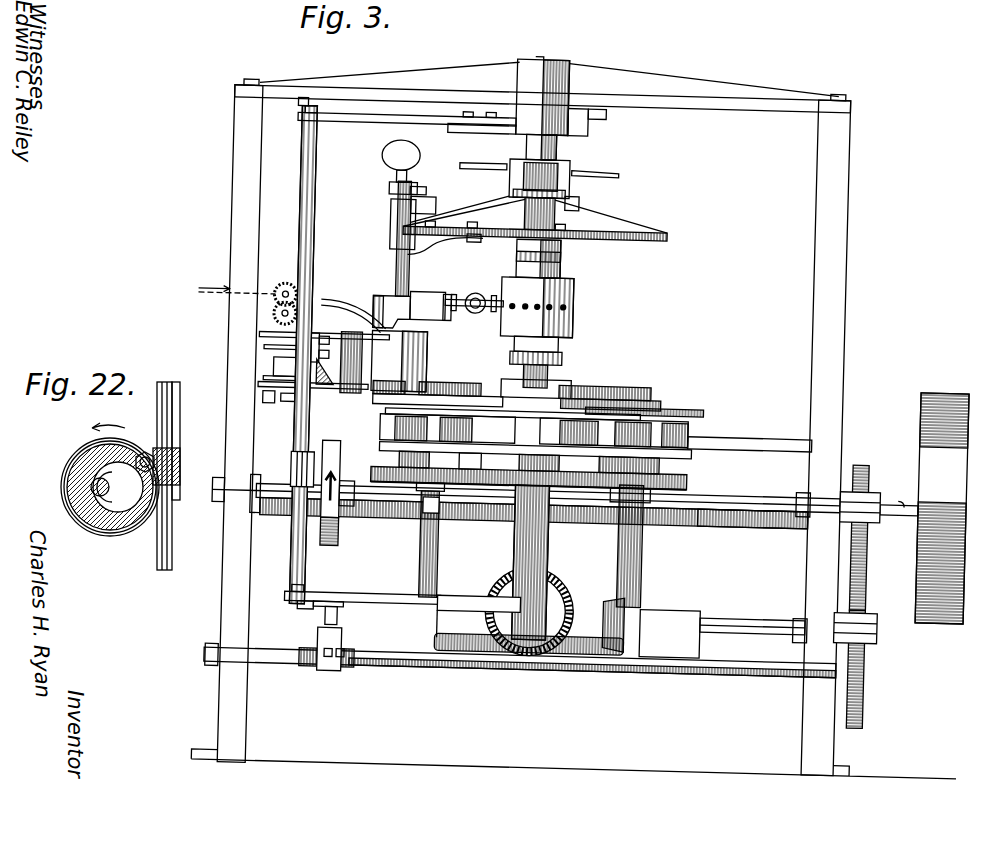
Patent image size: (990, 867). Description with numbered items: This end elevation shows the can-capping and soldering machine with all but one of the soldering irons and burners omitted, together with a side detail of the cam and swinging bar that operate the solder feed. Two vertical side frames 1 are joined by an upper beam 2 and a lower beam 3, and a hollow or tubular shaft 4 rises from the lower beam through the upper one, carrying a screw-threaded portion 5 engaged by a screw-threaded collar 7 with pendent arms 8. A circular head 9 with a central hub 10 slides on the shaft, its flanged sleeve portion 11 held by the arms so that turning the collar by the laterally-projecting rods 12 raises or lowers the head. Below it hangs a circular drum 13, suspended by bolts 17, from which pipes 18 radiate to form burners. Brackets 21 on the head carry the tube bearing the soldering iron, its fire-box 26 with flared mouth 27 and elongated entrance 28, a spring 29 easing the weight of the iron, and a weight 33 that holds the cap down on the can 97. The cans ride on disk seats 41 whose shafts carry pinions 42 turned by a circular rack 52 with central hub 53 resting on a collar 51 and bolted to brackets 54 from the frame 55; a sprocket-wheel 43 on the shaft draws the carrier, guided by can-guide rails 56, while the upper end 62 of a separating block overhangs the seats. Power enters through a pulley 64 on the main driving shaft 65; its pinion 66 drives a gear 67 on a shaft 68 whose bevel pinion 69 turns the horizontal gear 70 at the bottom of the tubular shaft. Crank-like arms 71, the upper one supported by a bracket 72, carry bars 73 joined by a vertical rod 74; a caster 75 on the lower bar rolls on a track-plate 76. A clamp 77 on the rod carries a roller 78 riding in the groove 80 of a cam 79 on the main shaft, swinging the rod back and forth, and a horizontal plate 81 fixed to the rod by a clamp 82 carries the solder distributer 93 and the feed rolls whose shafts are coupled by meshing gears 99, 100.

In FIG. 3, the vertical side frames 1 is at (230, 234).
In FIG. 3, the upper beam 2 is at (666, 92).
In FIG. 3, the lower beam 3 is at (697, 664).
In FIG. 3, the hollow or tubular shaft 4 is at (538, 60).
In FIG. 3, the screw-threaded portion 5 is at (520, 148).
In FIG. 3, the screw-threaded collar 7 is at (593, 171).
In FIG. 3, the pendent arms 8 is at (501, 181).
In FIG. 3, the circular head 9 is at (665, 227).
In FIG. 3, the central hub 10 is at (521, 212).
In FIG. 3, the flanged sleeve portion 11 is at (564, 195).
In FIG. 3, the laterally-projecting rods 12 is at (573, 167).
In FIG. 3, the circular drum 13 is at (567, 322).
In FIG. 3, the bolts 17 is at (564, 261).
In FIG. 3, the pipes 18 is at (494, 302).
In FIG. 3, the brackets 21 is at (382, 234).
In FIG. 3, the fire-box or heat chamber 26 is at (371, 299).
In FIG. 3, the flared mouth 27 is at (421, 299).
In FIG. 3, the elongated entrance 28 is at (442, 325).
In FIG. 3, the spring 29 is at (432, 253).
In FIG. 3, the weight 33 is at (375, 159).
In FIG. 3, the disk 41 is at (657, 395).
In FIG. 3, the pinion 42 is at (689, 474).
In FIG. 3, the sprocket-wheel 43 is at (695, 426).
In FIG. 3, the collar 51 is at (520, 529).
In FIG. 3, the circular rack 52 is at (441, 481).
In FIG. 3, the central hub 53 is at (514, 501).
In FIG. 3, the brackets 54 is at (626, 496).
In FIG. 3, the frame 55 is at (742, 500).
In FIG. 3, the can-guide rails 56 is at (476, 390).
In FIG. 3, the upper end of separating block 62 is at (699, 396).
In FIG. 3, the pulley 64 is at (923, 508).
In FIG. 3, the main driving shaft 65 is at (754, 500).
In FIG. 22, the main driving shaft 65 is at (95, 487).
In FIG. 3, the pinion 66 is at (861, 462).
In FIG. 3, the gear 67 is at (865, 614).
In FIG. 3, the shaft 68 is at (733, 615).
In FIG. 3, the bevel pinion 69 is at (632, 604).
In FIG. 3, the horizontal gear 70 is at (543, 661).
In FIG. 3, the crank-like arms 71 is at (532, 108).
In FIG. 3, the bracket 72 is at (560, 137).
In FIG. 3, the bars 73 is at (412, 125).
In FIG. 3, the vertical rod 74 is at (304, 221).
In FIG. 22, the vertical rod 74 is at (165, 545).
In FIG. 3, the caster or roller 75 is at (355, 637).
In FIG. 3, the horizontal track-plate 76 is at (325, 643).
In FIG. 3, the clamp 77 is at (298, 468).
In FIG. 22, the clamp 77 is at (178, 465).
In FIG. 3, the roller 78 is at (326, 476).
In FIG. 3, the cam 79 is at (340, 533).
In FIG. 22, the cam 79 is at (112, 533).
In FIG. 22, the groove 80 is at (90, 448).
In FIG. 3, the horizontal plate 81 is at (270, 385).
In FIG. 3, the clamp 82 is at (296, 352).
In FIG. 3, the head or distributer 93 is at (368, 363).
In FIG. 3, the can 97 is at (406, 372).
In FIG. 3, the gear 99 is at (268, 300).
In FIG. 3, the gear 100 is at (269, 323).